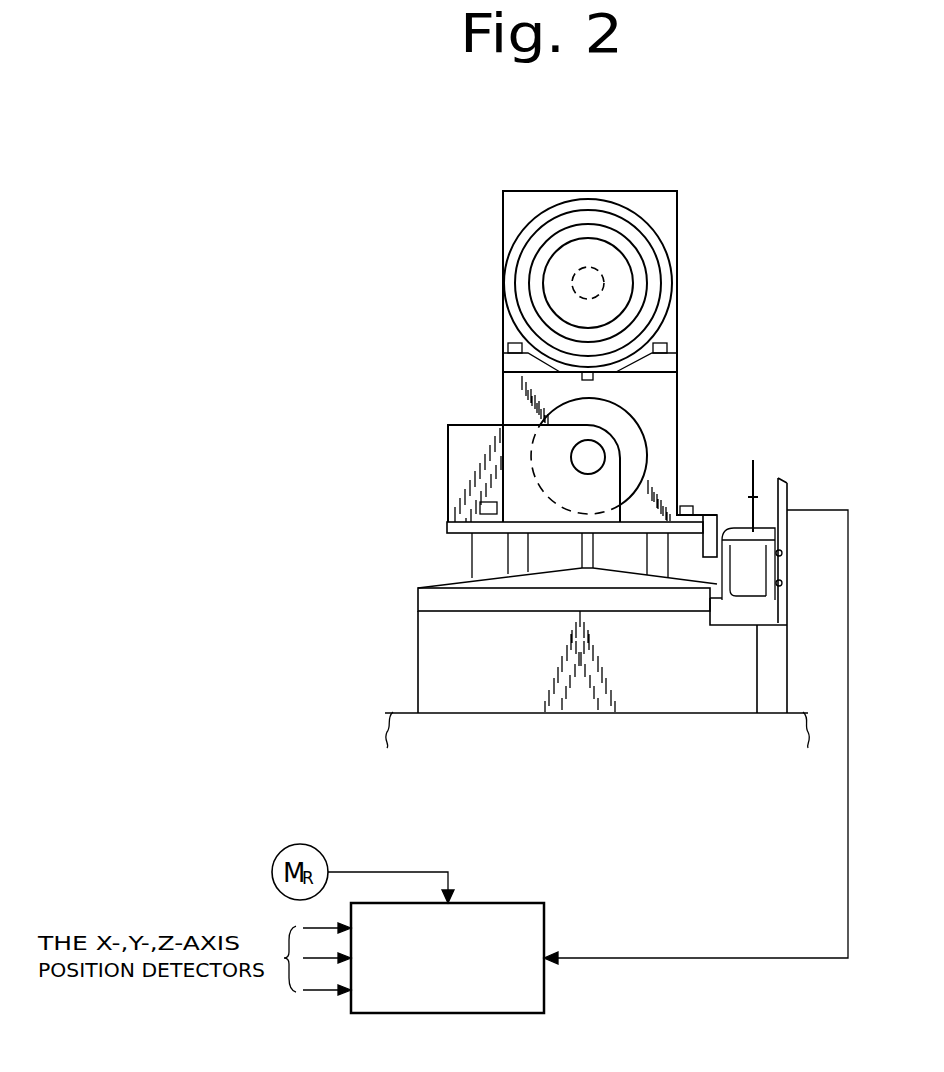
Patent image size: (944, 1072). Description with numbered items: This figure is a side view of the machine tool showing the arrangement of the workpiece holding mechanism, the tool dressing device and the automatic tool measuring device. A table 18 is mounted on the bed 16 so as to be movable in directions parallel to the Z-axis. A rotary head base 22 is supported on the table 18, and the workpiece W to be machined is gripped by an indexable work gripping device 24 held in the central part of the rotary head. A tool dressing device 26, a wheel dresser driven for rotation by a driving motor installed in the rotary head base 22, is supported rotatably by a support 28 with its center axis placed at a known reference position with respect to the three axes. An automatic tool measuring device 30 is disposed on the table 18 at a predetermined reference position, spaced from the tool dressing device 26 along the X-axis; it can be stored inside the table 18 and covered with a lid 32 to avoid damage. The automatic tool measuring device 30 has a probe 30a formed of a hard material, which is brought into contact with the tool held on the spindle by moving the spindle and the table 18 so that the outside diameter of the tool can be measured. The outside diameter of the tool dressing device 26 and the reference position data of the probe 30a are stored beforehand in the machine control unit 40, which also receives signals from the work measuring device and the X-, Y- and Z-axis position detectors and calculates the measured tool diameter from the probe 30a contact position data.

The bed 16 is at (398, 712).
The table 18 is at (433, 653).
The rotary head base 22 is at (510, 392).
The work gripping device 24 is at (653, 263).
The tool dressing device 26 is at (663, 215).
The support 28 is at (460, 452).
The automatic tool measuring device 30 is at (740, 498).
The probe 30a is at (753, 470).
The lid 32 is at (786, 485).
The machine control unit 40 is at (500, 903).
The workpiece W is at (603, 286).